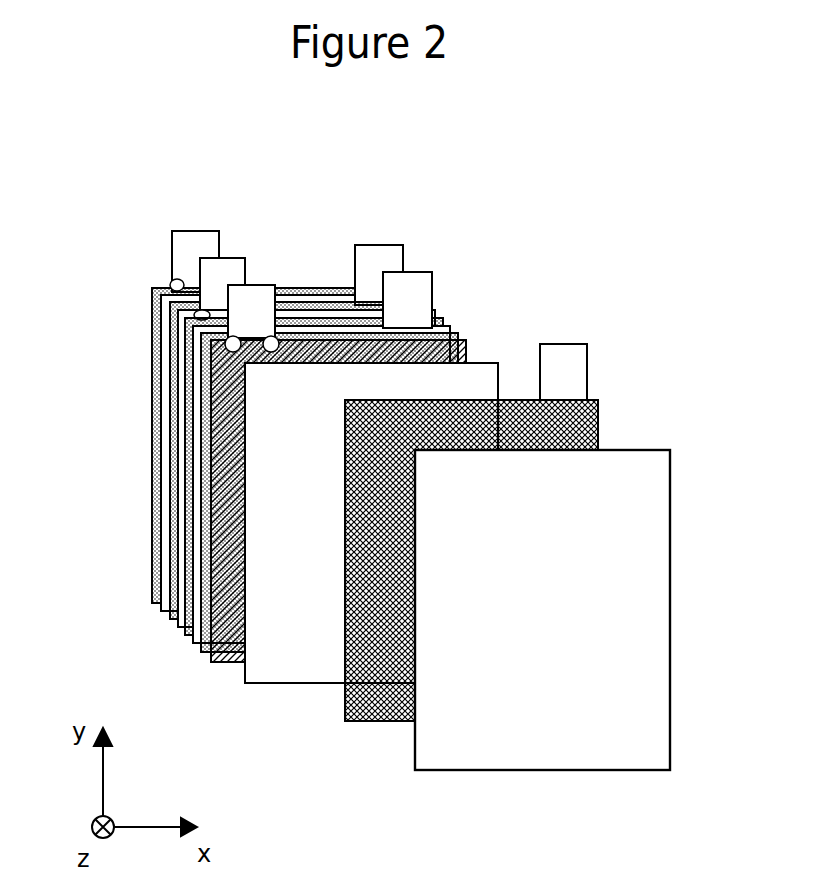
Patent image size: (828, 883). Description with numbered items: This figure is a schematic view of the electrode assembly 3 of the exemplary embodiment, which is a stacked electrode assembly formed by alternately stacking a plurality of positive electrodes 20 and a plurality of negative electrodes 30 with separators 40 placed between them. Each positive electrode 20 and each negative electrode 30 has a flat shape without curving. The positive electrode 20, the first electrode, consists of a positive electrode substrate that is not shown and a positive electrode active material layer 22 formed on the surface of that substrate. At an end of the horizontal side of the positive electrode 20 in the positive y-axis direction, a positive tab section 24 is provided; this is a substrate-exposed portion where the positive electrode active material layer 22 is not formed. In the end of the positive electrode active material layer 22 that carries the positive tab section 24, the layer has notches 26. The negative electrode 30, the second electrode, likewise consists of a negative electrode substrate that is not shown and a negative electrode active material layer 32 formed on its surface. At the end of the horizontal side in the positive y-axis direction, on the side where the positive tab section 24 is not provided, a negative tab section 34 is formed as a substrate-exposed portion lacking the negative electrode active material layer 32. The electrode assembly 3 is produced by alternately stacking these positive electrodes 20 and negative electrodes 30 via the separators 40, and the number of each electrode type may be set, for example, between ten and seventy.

The electrode assembly 3 is at (655, 157).
The positive electrode 20 is at (185, 640).
The positive electrode active material layer 22 is at (265, 410).
The positive tab section 24 is at (203, 240).
The notches 26 is at (167, 287).
The negative electrode 30 is at (398, 557).
The negative electrode active material layer 32 is at (508, 532).
The negative tab section 34 is at (585, 371).
The separator 40 is at (390, 600).